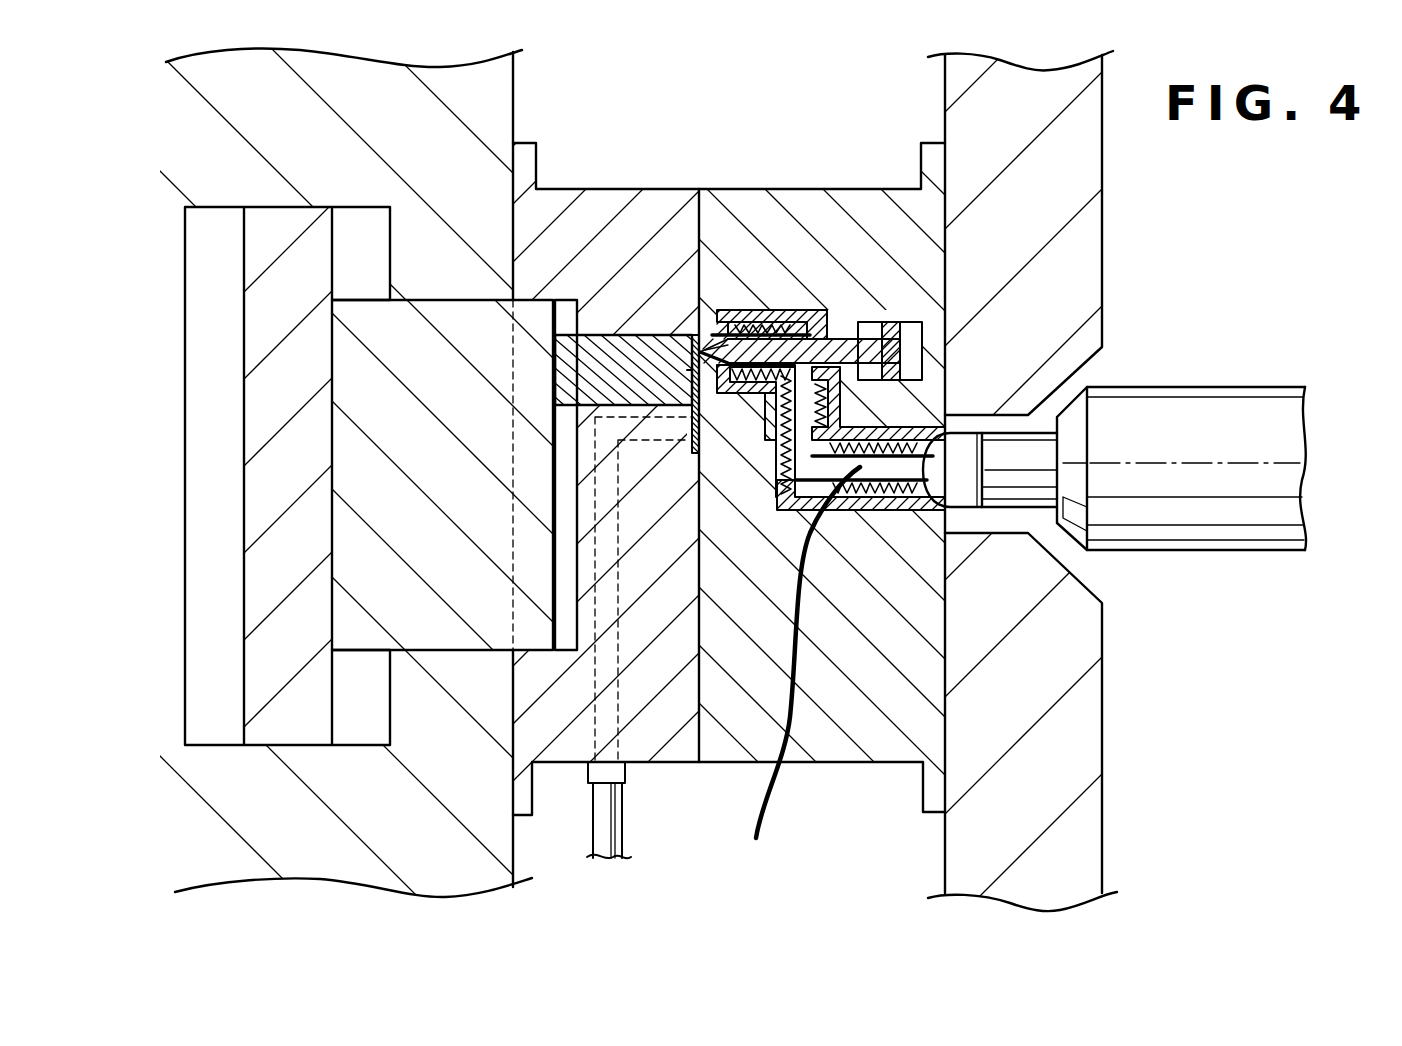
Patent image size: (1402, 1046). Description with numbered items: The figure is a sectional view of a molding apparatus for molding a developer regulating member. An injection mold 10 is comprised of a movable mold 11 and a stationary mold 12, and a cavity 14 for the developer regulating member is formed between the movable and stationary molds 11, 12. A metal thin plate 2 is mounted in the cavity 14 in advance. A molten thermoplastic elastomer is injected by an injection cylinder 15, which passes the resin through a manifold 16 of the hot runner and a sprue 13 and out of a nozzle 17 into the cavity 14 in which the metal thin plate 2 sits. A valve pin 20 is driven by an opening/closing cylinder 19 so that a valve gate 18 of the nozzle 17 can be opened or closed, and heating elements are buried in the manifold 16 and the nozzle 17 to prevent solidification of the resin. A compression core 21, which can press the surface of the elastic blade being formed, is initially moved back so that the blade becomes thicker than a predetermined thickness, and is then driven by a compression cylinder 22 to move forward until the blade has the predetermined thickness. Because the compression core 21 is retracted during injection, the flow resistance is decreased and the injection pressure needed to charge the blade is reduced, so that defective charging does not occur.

The injection mold 10 is at (776, 61).
The movable mold 11 is at (608, 333).
The stationary mold 12 is at (815, 190).
The metal thin plate 2 is at (657, 352).
The sprue 13 is at (796, 676).
The cavity 14 is at (697, 352).
The injection cylinder 15 is at (1193, 405).
The manifold 16 is at (917, 512).
The nozzle 17 is at (784, 327).
The valve gate 18 is at (700, 350).
The opening/closing cylinder 19 is at (883, 330).
The valve pin 20 is at (840, 347).
The compression core 21 is at (553, 357).
The compression cylinder 22 is at (263, 207).